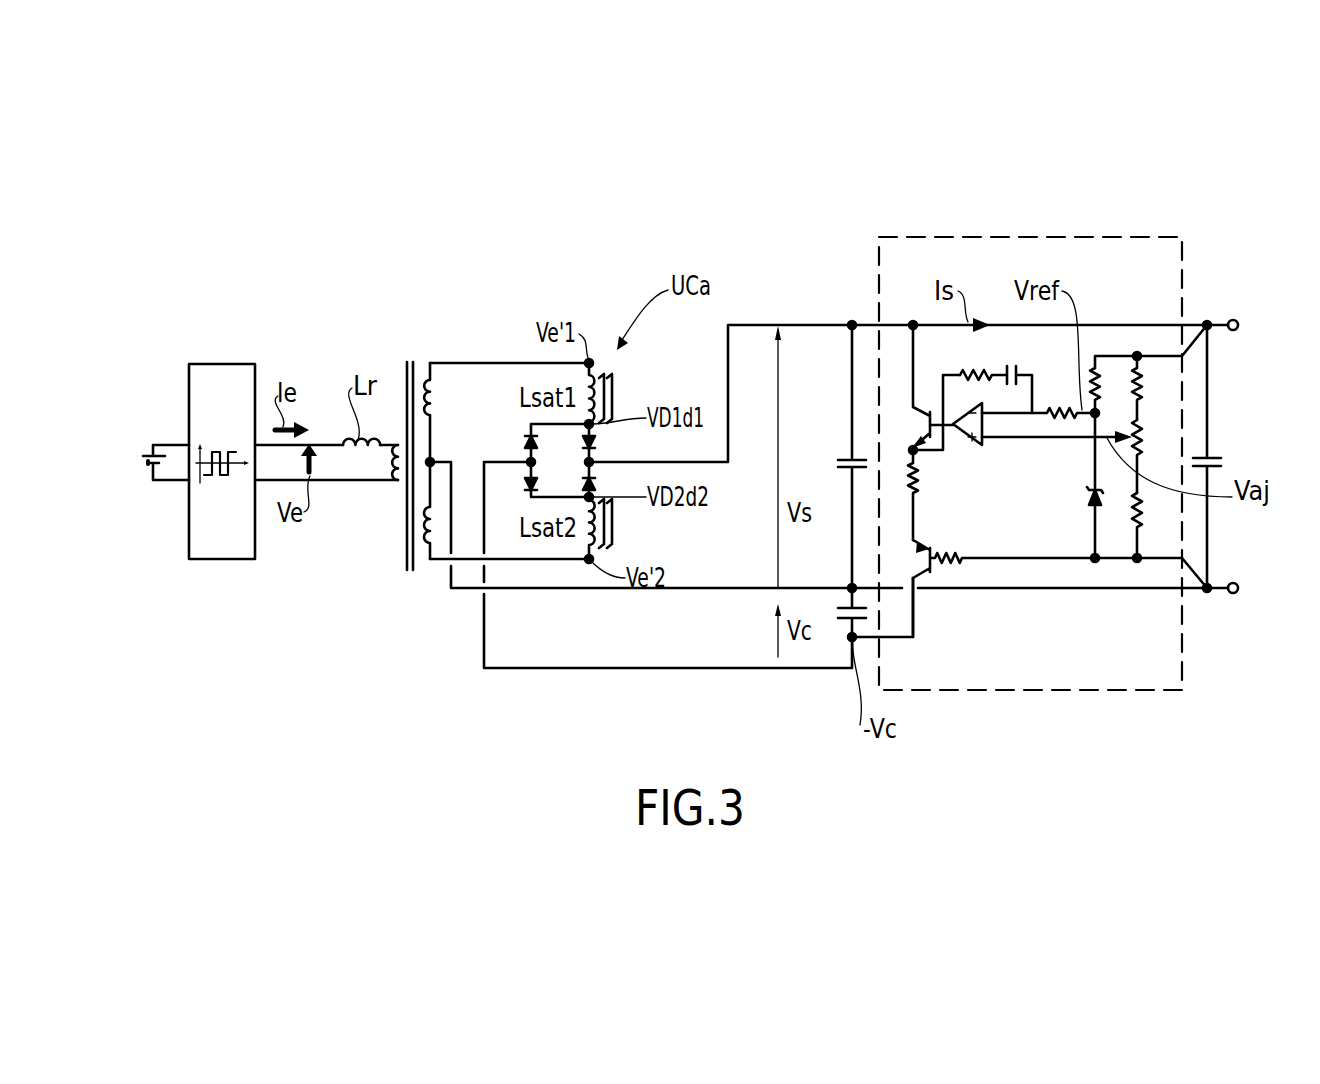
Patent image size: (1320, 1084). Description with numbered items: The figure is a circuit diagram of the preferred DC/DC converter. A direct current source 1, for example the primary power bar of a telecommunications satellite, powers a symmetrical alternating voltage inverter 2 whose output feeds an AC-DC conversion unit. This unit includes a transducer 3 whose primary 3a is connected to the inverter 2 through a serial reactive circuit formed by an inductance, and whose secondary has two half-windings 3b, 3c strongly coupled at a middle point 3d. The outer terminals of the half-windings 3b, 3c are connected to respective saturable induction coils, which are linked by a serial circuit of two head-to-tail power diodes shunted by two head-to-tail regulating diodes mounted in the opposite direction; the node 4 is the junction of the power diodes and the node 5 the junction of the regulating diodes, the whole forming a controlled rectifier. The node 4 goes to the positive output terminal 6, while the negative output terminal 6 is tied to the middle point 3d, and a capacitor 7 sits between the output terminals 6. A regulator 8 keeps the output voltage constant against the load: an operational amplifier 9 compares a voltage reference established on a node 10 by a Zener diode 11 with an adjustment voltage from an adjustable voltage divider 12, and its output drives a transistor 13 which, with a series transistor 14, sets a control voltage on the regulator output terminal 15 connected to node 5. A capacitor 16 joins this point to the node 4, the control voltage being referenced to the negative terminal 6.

The direct current source 1 is at (152, 470).
The symmetrical alternating voltage inverter 2 is at (226, 561).
The transducer 3 is at (411, 354).
The primary 3a is at (395, 481).
The half-winding 3b is at (437, 396).
The half-winding 3c is at (434, 528).
The middle point 3d is at (433, 460).
The node 4 is at (584, 467).
The node 5 is at (537, 456).
The output terminals 6 is at (1240, 322).
The capacitor 7 is at (846, 458).
The regulator 8 is at (981, 234).
The operational amplifier 9 is at (968, 430).
The node 10 is at (1100, 412).
The Zener diode 11 is at (1090, 497).
The adjustable voltage divider 12 is at (1144, 441).
The transistor 13 is at (925, 420).
The transistor 14 is at (925, 556).
The output terminal 15 is at (914, 626).
The capacitor 16 is at (839, 621).